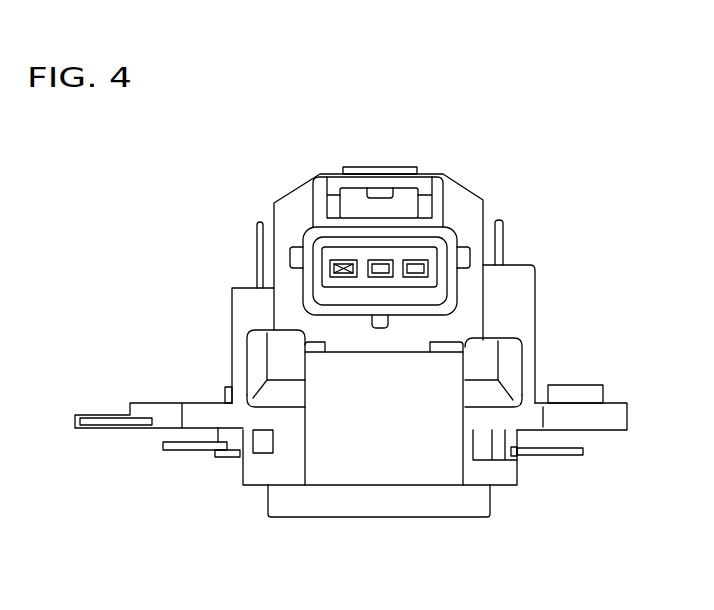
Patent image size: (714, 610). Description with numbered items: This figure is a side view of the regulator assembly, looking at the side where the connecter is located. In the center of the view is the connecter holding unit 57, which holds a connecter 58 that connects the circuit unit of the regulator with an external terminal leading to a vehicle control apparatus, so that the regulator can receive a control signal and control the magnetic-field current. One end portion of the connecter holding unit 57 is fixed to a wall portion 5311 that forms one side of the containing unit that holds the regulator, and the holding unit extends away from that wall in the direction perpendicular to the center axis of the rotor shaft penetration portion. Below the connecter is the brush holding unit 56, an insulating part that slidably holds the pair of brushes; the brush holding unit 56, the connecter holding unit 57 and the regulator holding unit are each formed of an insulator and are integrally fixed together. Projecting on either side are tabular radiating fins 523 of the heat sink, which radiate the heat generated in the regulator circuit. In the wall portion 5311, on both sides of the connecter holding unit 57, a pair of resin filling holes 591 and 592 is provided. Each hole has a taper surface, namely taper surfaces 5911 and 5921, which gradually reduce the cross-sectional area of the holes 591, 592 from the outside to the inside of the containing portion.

The brush holding unit 56 is at (362, 453).
The connecter holding unit 57 is at (431, 250).
The connecter 58 is at (338, 266).
The radiating fins 523 is at (260, 233).
The wall portion 5311 is at (462, 303).
The resin filling hole 591 is at (278, 348).
The resin filling hole 592 is at (490, 353).
The taper surface 5911 is at (283, 398).
The taper surface 5921 is at (500, 396).